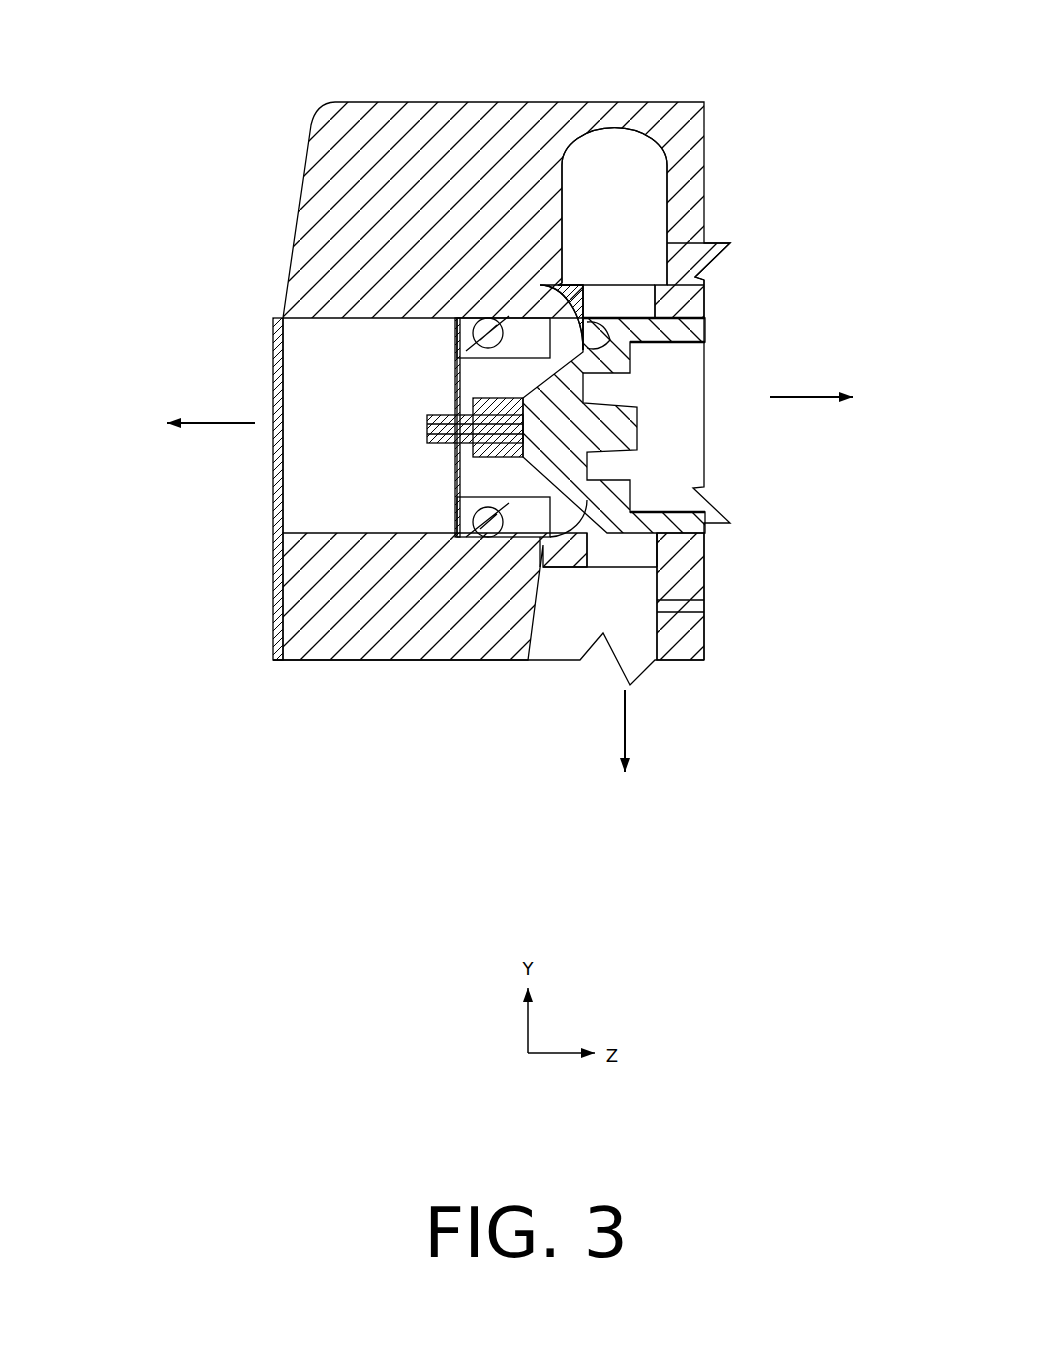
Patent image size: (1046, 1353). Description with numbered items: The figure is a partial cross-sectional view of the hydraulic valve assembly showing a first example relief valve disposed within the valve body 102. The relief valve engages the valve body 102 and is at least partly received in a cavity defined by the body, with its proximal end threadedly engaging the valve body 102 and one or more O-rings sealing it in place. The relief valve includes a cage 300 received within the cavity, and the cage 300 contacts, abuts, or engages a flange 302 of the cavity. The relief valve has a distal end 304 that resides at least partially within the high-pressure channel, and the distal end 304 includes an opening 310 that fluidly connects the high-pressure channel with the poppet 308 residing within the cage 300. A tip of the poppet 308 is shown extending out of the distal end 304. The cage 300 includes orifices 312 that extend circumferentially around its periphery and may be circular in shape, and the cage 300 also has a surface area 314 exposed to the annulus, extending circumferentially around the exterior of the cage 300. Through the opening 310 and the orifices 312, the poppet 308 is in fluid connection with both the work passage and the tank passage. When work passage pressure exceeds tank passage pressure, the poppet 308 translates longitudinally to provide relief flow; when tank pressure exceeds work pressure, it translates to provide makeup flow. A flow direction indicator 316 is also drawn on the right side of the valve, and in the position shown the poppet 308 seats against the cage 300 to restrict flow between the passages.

The valve body 102 is at (501, 393).
The cage 300 is at (580, 268).
The flange 302 is at (556, 284).
The distal end 304 is at (453, 332).
The poppet 308 is at (614, 425).
The opening 310 is at (453, 453).
The orifices 312 is at (649, 288).
The surface area 314 is at (644, 548).
The flow direction 316 is at (822, 398).